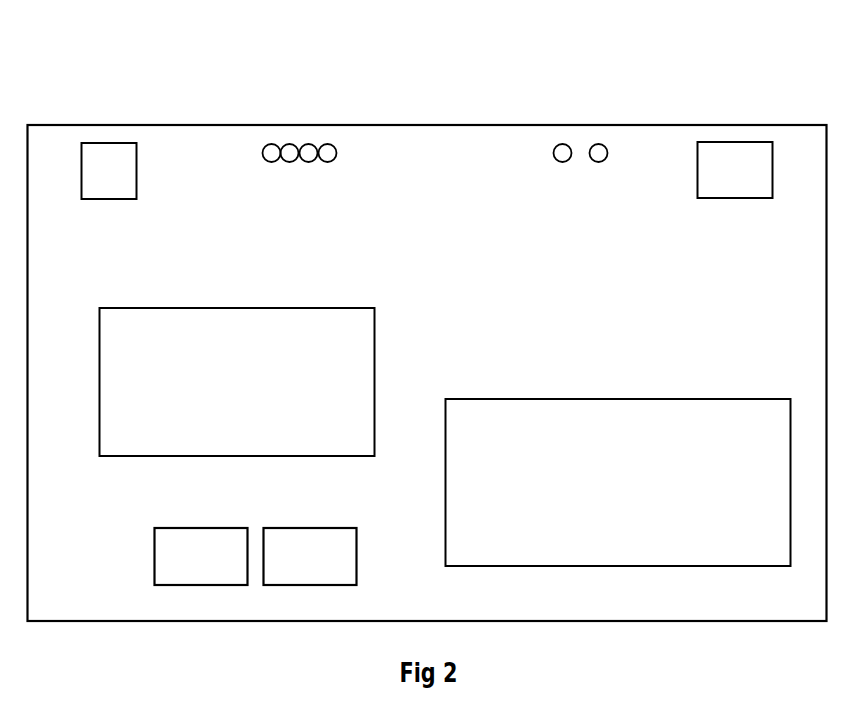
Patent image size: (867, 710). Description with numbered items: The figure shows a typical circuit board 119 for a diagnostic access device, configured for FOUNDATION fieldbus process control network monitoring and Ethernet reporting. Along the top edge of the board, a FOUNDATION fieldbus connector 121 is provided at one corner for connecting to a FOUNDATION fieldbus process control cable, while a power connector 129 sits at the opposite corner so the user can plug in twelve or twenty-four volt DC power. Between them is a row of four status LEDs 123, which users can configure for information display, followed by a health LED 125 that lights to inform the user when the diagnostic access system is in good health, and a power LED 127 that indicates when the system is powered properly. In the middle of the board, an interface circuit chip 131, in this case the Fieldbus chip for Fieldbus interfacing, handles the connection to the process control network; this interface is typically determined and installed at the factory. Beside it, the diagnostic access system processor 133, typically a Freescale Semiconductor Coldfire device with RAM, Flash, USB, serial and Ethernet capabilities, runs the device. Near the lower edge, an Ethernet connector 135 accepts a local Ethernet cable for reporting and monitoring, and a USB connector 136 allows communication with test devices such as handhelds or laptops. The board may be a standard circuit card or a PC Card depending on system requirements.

The diagnostic access system circuit board 119 is at (407, 130).
The FOUNDATION fieldbus connector 121 is at (130, 165).
The status LEDs 123 is at (328, 165).
The health LED 125 is at (556, 160).
The power LED 127 is at (605, 160).
The power connector 129 is at (772, 143).
The interface circuit chip 131 is at (237, 382).
The diagnostic access system processor 133 is at (618, 482).
The Ethernet connector 135 is at (172, 537).
The USB connector 136 is at (310, 537).